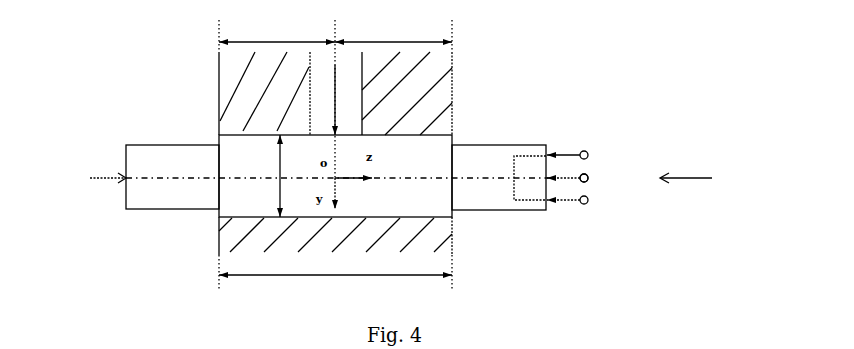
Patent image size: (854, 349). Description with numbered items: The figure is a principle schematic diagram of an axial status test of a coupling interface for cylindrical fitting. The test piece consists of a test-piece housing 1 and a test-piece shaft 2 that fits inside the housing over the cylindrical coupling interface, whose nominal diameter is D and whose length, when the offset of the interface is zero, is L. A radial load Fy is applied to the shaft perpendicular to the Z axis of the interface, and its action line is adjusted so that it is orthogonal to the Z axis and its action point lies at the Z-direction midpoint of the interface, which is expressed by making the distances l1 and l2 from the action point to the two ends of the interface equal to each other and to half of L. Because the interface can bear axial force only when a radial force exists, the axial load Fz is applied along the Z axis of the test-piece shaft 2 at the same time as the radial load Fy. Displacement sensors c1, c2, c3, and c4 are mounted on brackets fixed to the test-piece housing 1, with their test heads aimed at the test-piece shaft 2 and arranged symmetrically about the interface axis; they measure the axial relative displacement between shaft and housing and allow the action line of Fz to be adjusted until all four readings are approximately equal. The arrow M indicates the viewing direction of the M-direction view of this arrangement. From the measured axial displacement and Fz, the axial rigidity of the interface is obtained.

The test-piece housing 1 is at (232, 75).
The test-piece shaft 2 is at (168, 144).
The displacement sensor c1 is at (577, 153).
The displacement sensor c2 is at (579, 175).
The displacement sensor c3 is at (577, 199).
The displacement sensor c4 is at (604, 175).
The distance from radial load action point to one end of the coupling interface l1 is at (277, 33).
The distance from radial load action point to other end of the coupling interface l2 is at (393, 33).
The length of the coupling interface for cylindrical fitting L is at (335, 266).
The nominal diameter of the coupling interface for cylindrical fitting D is at (268, 176).
The radial load Fy is at (326, 100).
The axial load Fz is at (108, 166).
The M-direction M is at (686, 167).